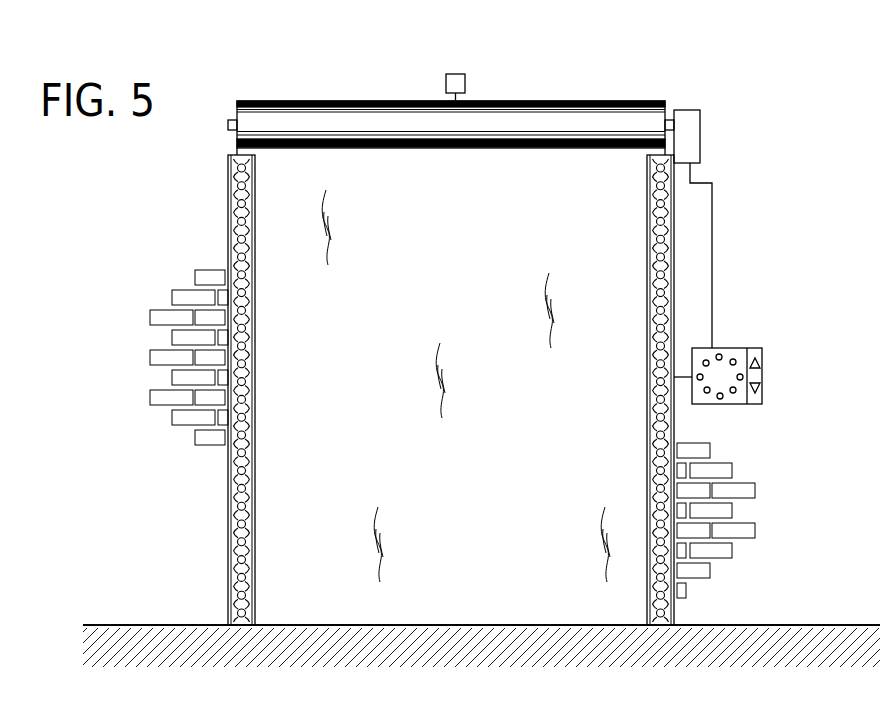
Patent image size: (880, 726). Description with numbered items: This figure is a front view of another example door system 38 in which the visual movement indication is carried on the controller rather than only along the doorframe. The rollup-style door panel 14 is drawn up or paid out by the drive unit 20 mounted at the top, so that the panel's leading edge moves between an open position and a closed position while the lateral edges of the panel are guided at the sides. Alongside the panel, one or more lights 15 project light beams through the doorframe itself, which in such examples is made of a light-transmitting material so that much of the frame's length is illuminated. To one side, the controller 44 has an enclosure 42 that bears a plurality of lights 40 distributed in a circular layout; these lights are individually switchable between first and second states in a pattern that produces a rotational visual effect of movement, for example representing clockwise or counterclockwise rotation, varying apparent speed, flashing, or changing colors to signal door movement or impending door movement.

The door system 38 is at (150, 222).
The door panel 14 is at (288, 516).
The lights 15 is at (244, 436).
The drive unit 20 is at (700, 133).
The lights 40 is at (733, 359).
The enclosure 42 is at (740, 404).
The controller 44 is at (763, 373).